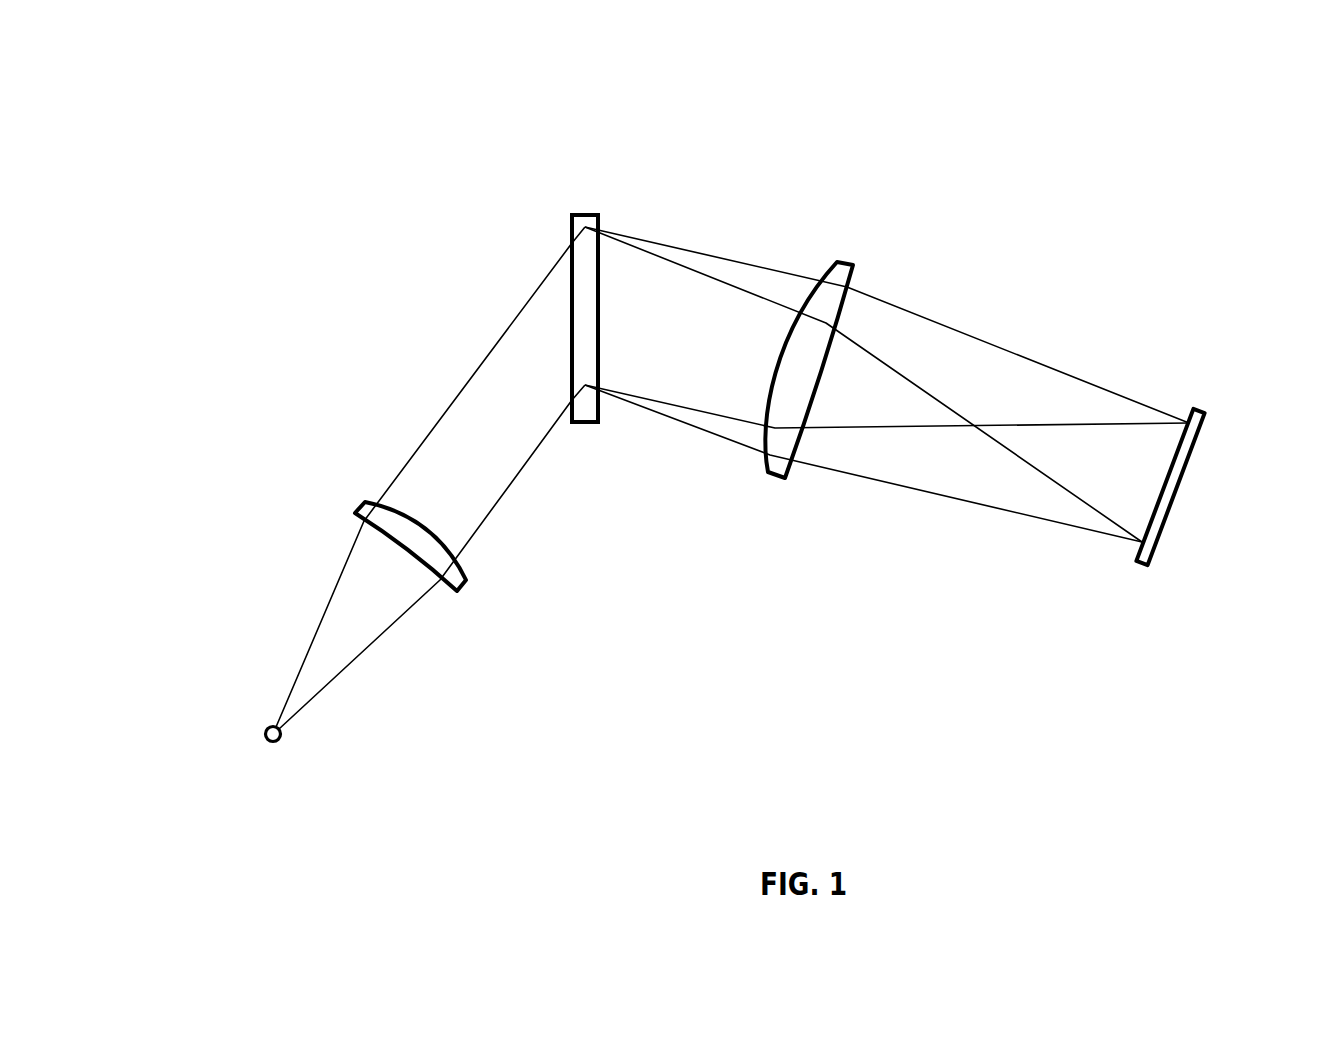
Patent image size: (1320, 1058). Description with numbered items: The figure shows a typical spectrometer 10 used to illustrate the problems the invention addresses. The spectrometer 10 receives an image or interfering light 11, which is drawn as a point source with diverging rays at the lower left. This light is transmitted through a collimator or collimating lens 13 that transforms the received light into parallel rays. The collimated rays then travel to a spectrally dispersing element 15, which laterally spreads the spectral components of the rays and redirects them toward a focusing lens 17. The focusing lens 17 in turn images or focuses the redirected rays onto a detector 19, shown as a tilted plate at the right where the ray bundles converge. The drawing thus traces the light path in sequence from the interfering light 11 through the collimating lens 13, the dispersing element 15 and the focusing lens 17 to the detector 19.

The spectrometer 10 is at (932, 142).
The image or interfering light 11 is at (408, 785).
The collimating lens 13 is at (304, 504).
The spectrally dispersing element 15 is at (530, 280).
The focusing lens 17 is at (769, 418).
The detector 19 is at (1149, 517).